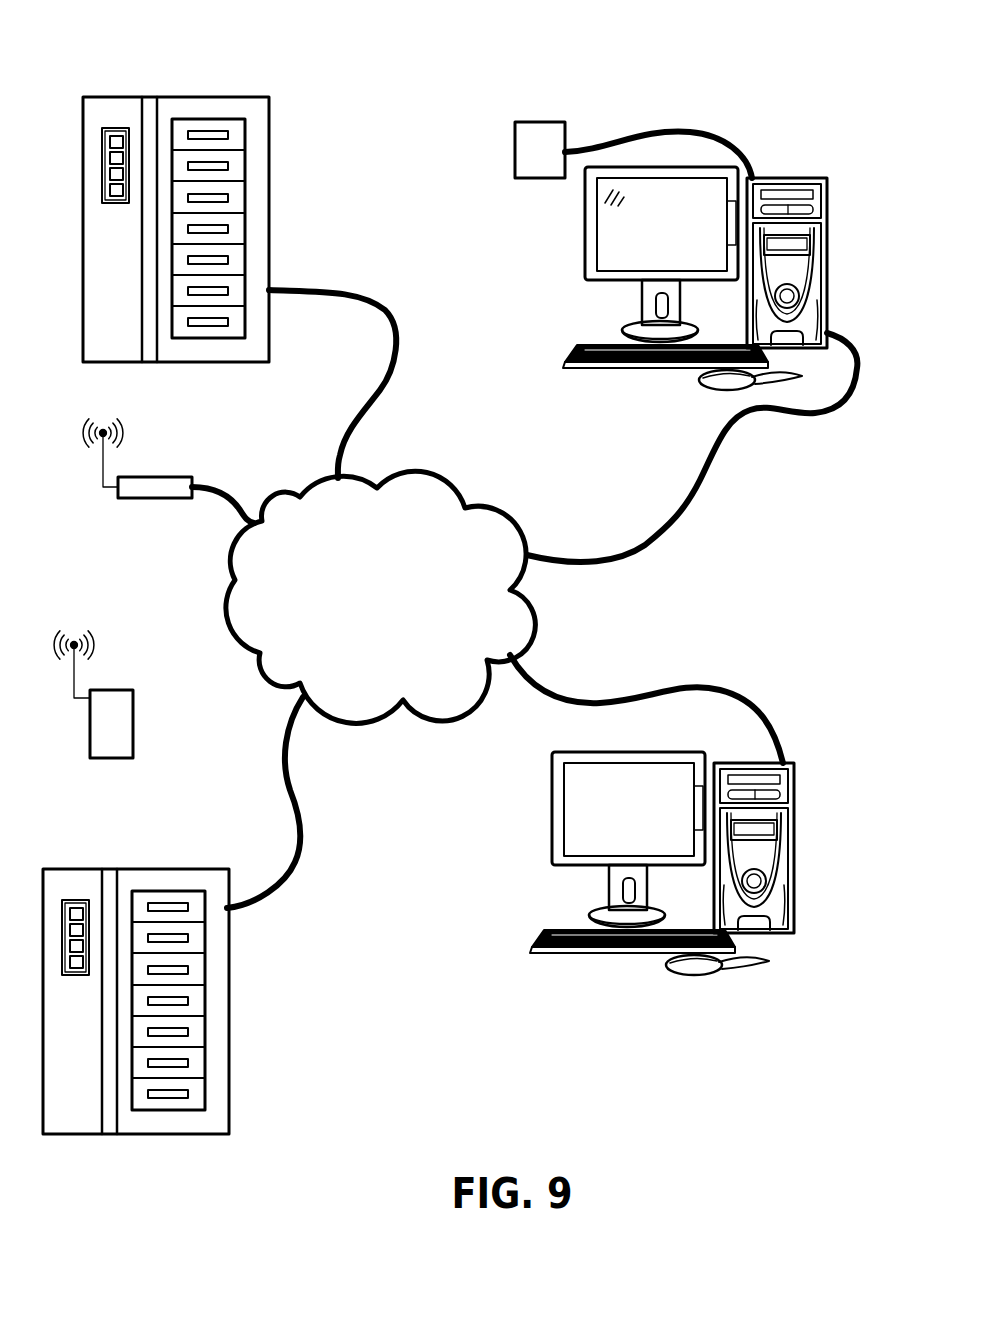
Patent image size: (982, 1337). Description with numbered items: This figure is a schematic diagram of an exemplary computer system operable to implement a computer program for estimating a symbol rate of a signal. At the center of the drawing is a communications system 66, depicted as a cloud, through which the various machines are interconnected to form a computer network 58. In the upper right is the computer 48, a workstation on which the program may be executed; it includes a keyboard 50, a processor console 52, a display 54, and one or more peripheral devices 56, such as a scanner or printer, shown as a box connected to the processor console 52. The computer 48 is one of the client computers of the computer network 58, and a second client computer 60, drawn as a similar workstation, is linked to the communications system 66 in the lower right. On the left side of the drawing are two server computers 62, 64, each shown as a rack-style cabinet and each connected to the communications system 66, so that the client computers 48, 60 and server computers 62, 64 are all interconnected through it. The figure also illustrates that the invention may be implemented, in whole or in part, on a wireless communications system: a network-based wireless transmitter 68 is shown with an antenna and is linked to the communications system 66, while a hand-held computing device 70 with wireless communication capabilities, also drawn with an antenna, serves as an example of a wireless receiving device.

The computer 48 is at (673, 244).
The keyboard 50 is at (645, 365).
The processor console 52 is at (830, 213).
The display 54 is at (585, 237).
The peripheral device 56 is at (515, 150).
The computer network 58 is at (699, 760).
The client computer 60 is at (800, 810).
The server computer 62 is at (182, 97).
The server computer 64 is at (222, 1018).
The communications system 66 is at (432, 698).
The network-based wireless transmitter 68 is at (157, 480).
The hand-held computing device 70 is at (123, 728).